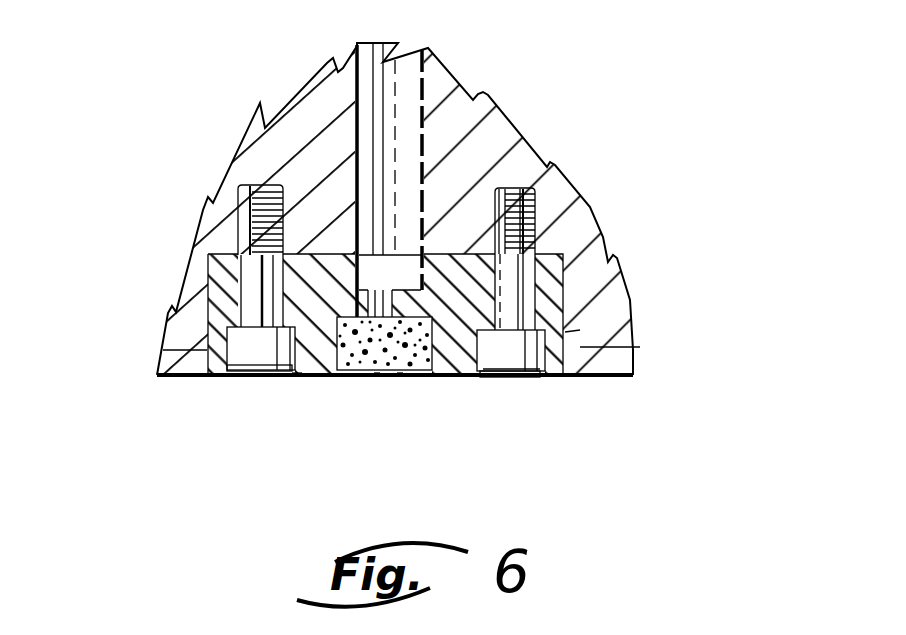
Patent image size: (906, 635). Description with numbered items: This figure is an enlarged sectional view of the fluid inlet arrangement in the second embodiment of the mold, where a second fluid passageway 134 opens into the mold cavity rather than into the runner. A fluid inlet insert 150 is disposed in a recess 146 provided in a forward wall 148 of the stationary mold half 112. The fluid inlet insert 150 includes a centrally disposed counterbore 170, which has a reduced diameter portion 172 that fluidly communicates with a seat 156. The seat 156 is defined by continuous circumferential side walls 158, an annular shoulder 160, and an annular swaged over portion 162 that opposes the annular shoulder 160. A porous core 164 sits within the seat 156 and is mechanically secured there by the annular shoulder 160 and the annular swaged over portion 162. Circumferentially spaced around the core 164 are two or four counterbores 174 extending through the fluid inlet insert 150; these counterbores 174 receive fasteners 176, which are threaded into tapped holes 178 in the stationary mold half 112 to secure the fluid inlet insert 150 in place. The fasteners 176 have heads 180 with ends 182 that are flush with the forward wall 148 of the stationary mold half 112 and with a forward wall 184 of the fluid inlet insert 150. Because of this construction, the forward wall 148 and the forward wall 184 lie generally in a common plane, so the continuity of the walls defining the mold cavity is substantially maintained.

The stationary mold half 112 is at (507, 127).
The second fluid passageway 134 is at (407, 97).
The recess 146 is at (565, 332).
The forward wall 148 is at (177, 377).
The fluid inlet insert 150 is at (567, 254).
The seat 156 is at (418, 370).
The continuous circumferential side walls 158 is at (298, 378).
The annular shoulder 160 is at (346, 298).
The annular swaged over portion 162 is at (400, 377).
The porous core 164 is at (377, 377).
The counterbore 170 is at (400, 262).
The reduced diameter portion 172 is at (463, 377).
The counterbores 174 is at (163, 350).
The fasteners 176 is at (255, 300).
The tapped holes 178 is at (237, 212).
The heads 180 is at (230, 378).
The ends 182 is at (255, 380).
The forward wall 184 is at (297, 377).